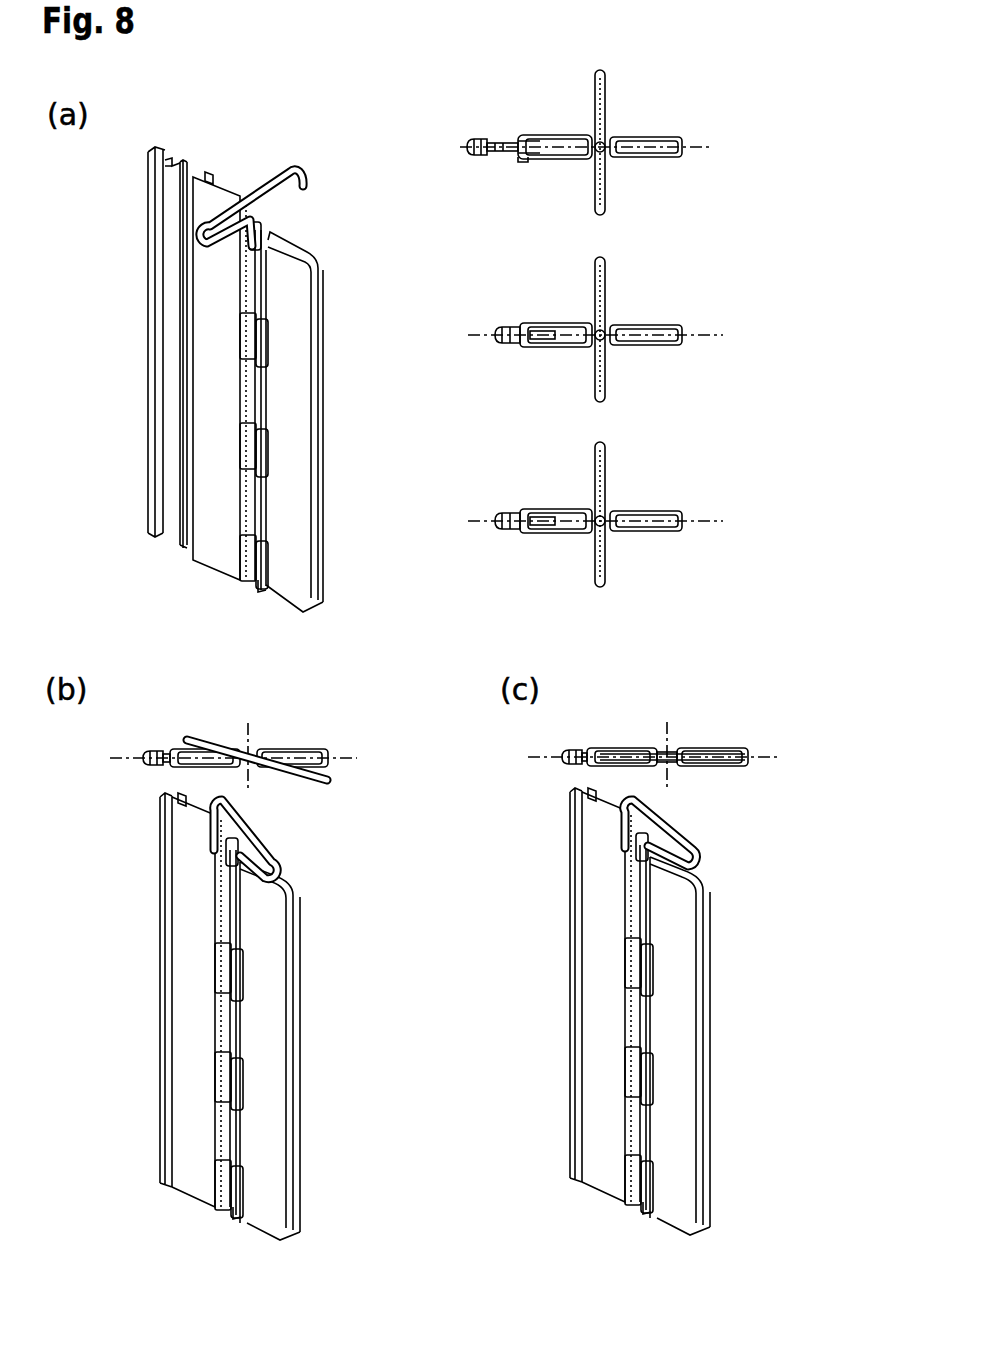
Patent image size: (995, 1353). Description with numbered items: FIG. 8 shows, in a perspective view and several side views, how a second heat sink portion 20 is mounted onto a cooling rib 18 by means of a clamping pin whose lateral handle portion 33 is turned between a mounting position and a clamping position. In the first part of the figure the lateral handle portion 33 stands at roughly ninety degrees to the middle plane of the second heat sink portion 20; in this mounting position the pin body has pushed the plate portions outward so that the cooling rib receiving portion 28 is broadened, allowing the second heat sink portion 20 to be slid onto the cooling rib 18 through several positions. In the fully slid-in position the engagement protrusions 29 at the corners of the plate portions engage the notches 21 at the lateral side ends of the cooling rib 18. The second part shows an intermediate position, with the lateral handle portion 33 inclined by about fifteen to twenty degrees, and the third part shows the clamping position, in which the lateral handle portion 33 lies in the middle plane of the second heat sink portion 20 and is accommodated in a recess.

The cooling rib 18 is at (177, 245).
The second heat sink portion 20 is at (230, 590).
The notch 21 is at (180, 158).
The cooling rib receiving portion 28 is at (510, 130).
The engagement protrusion 29 is at (523, 163).
The lateral handle portion 33 is at (264, 180).